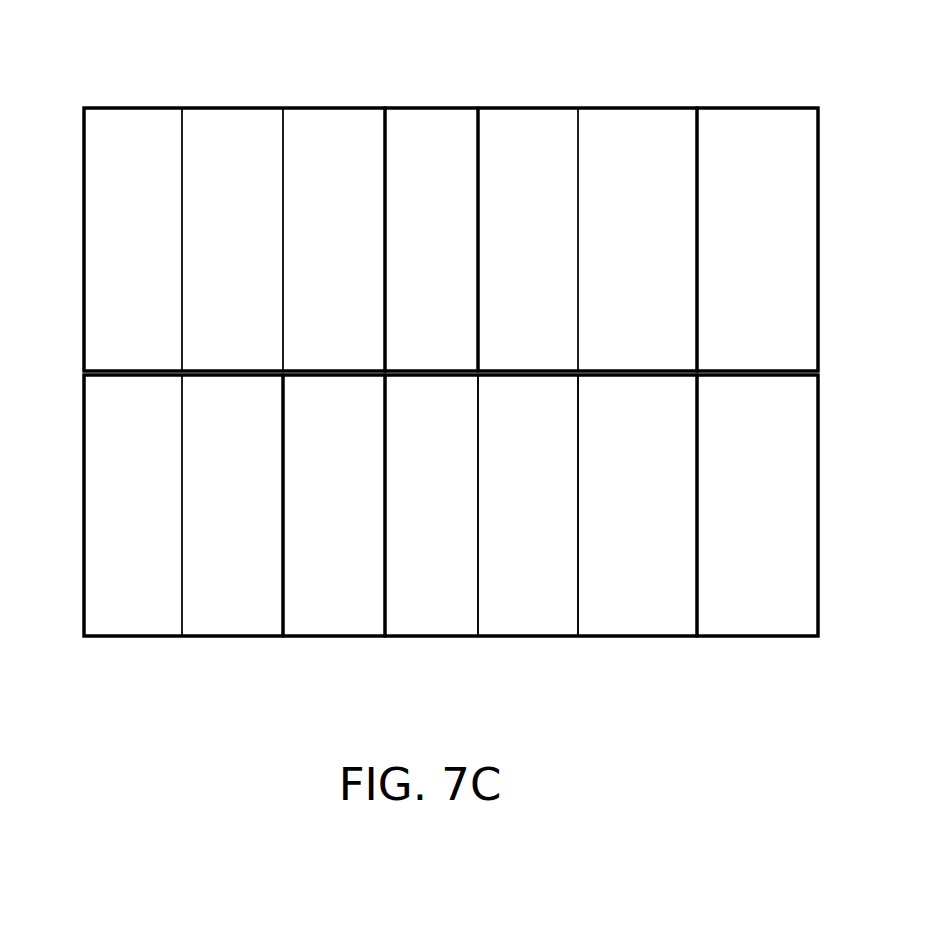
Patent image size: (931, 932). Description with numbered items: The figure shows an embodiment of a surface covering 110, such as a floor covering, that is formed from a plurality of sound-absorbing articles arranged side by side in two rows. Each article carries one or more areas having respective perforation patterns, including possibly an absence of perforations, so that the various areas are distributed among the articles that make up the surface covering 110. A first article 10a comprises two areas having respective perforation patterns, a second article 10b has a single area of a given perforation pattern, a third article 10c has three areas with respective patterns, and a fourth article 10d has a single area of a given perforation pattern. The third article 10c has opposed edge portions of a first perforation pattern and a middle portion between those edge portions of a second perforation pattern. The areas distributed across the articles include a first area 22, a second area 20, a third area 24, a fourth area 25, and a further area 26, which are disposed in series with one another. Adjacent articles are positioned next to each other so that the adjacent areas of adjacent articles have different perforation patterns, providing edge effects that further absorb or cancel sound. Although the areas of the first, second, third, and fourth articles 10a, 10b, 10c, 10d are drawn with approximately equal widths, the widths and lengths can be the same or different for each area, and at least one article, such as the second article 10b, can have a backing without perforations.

The surface covering 110 is at (146, 52).
The first article 10a is at (695, 99).
The second article 10b is at (385, 95).
The third article 10c is at (77, 98).
The fourth article 10d is at (700, 654).
The second area 20 is at (528, 298).
The first area 22 is at (200, 266).
The third area 24 is at (114, 266).
The fourth area 25 is at (615, 294).
The area 26 is at (420, 293).